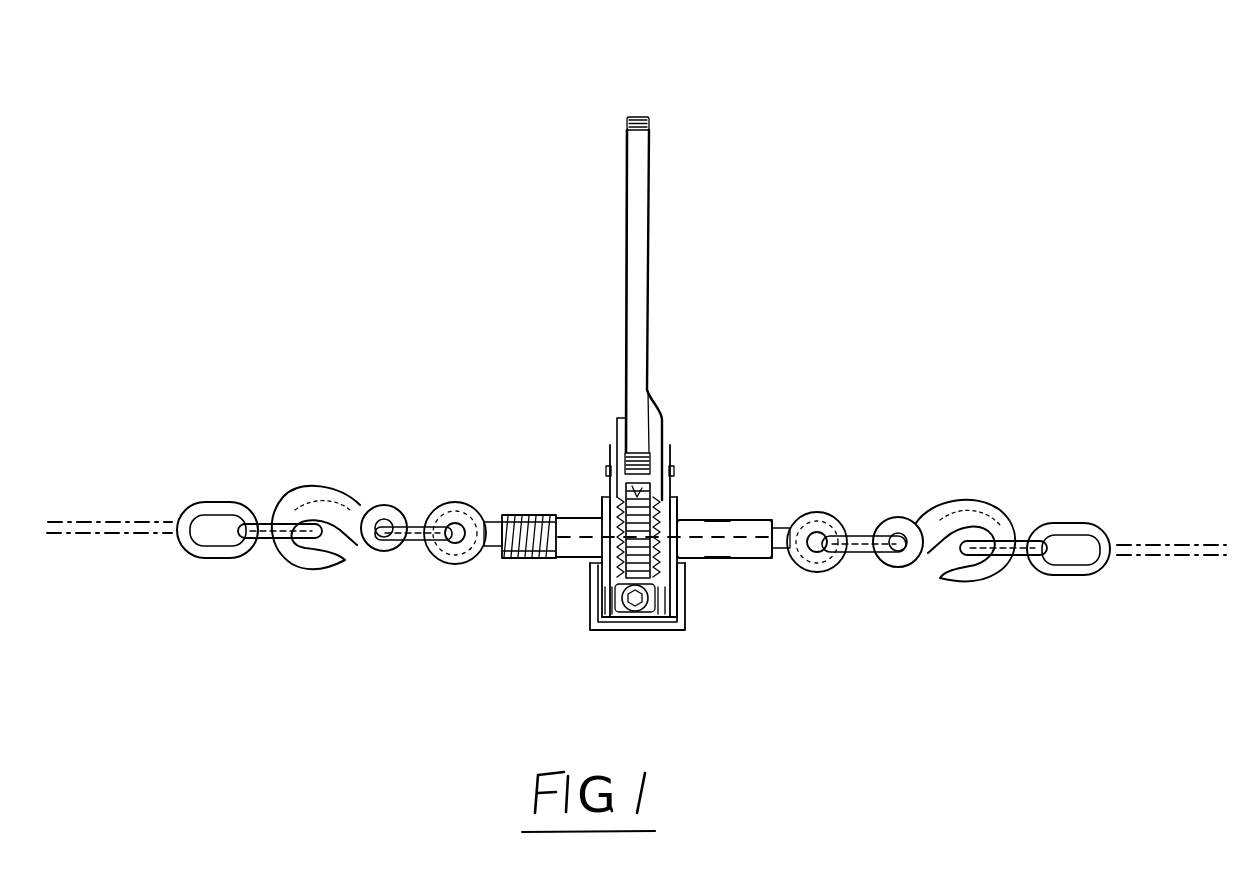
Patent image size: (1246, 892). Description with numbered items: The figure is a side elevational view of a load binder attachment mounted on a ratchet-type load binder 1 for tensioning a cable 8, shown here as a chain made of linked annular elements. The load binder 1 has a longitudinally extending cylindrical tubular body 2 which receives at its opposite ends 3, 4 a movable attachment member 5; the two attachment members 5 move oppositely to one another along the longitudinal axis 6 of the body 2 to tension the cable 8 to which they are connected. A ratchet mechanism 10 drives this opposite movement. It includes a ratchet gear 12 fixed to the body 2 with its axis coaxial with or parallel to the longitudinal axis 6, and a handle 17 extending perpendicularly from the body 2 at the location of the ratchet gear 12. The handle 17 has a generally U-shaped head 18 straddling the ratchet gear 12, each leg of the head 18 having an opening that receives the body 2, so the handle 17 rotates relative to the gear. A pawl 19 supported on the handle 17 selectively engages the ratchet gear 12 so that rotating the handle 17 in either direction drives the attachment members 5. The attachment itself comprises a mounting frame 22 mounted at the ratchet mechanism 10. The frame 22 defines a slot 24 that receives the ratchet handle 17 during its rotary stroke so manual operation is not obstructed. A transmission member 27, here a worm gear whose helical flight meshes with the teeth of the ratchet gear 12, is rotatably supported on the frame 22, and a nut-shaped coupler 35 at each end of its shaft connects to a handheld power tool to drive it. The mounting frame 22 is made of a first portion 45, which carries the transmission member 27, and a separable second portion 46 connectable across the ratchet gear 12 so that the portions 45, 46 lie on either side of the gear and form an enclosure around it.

The ratchet-type load binder 1 is at (743, 568).
The tubular body 2 is at (600, 337).
The first end of the body 3 is at (519, 515).
The second end of the body 4 is at (776, 520).
The movable attachment member 5 is at (455, 502).
The longitudinal axis 6 is at (717, 540).
The cable 8 is at (1063, 576).
The ratchet mechanism 10 is at (641, 112).
The ratchet gear 12 is at (666, 500).
The handle 17 is at (638, 298).
The U-shaped head 18 is at (611, 462).
The pawl 19 is at (656, 440).
The mounting frame 22 is at (597, 566).
The slot 24 is at (607, 484).
The transmission member 27 is at (640, 622).
The coupler 35 is at (625, 631).
The first portion of the mounting frame 45 is at (606, 513).
The second portion of the mounting frame 46 is at (676, 521).